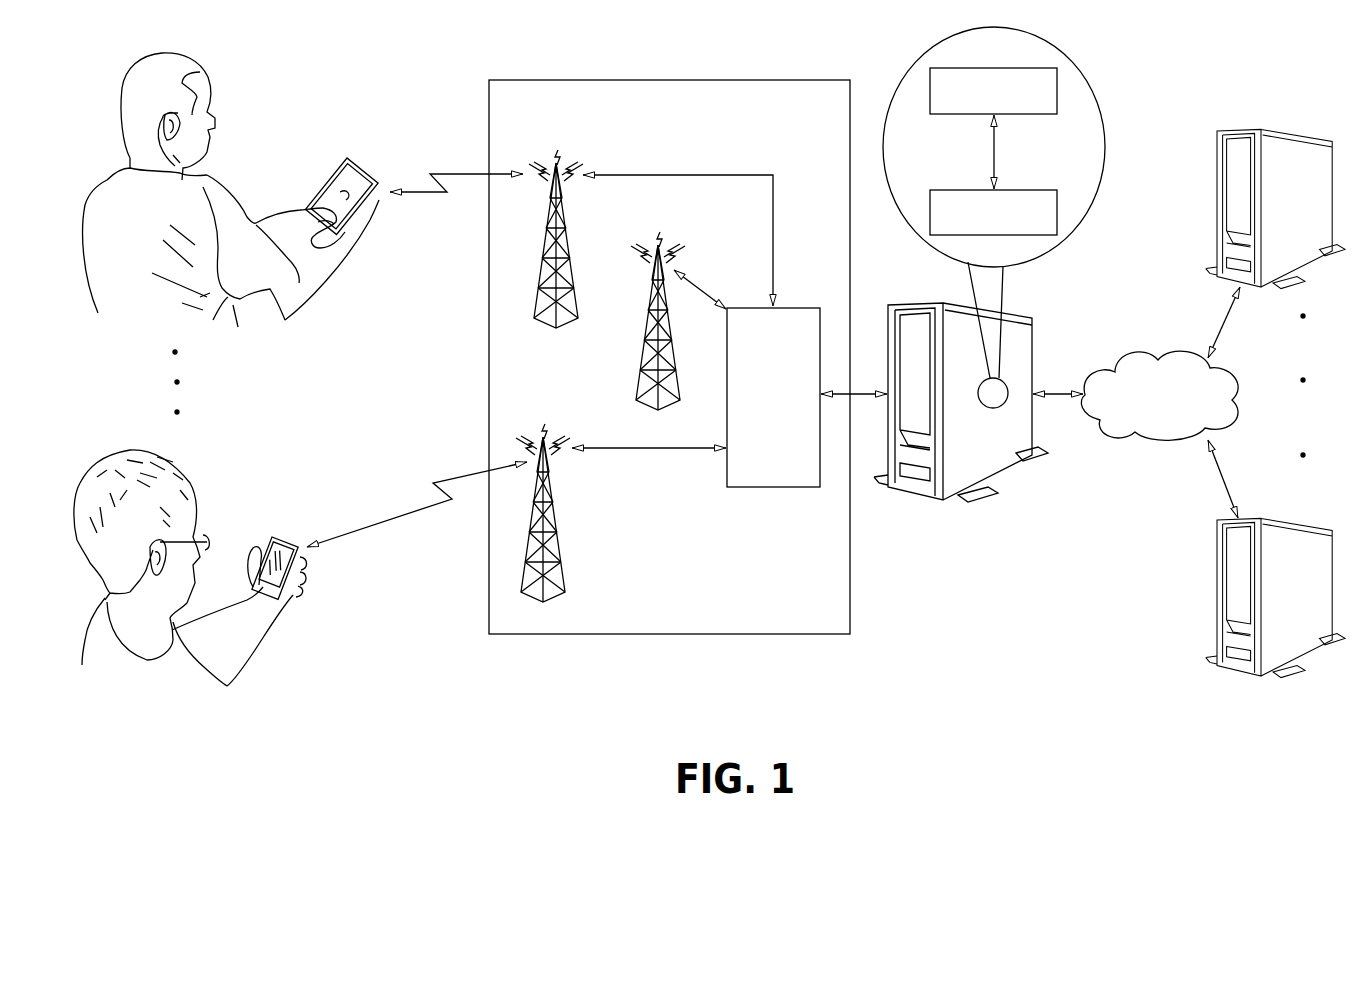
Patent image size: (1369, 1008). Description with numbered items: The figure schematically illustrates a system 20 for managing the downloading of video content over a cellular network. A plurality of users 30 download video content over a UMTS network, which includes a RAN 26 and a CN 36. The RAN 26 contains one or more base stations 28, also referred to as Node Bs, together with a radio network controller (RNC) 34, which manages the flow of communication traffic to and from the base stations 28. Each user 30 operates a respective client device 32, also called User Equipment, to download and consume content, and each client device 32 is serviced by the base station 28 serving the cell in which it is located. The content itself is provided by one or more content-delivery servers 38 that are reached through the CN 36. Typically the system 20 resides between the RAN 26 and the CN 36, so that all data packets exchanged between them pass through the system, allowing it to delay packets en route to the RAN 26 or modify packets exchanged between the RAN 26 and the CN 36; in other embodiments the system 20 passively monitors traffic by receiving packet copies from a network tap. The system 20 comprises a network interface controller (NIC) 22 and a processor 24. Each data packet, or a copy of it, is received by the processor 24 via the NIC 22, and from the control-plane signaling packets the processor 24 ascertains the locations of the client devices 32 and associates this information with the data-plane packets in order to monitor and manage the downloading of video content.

The system 20 is at (1053, 321).
The network interface controller 22 is at (1026, 114).
The processor 24 is at (962, 190).
The RAN 26 is at (595, 634).
The base station 28 is at (533, 545).
The user 30 is at (83, 480).
The client device 32 is at (318, 180).
The radio network controller 34 is at (780, 487).
The CN 36 is at (1115, 432).
The content-delivery server 38 is at (1240, 130).